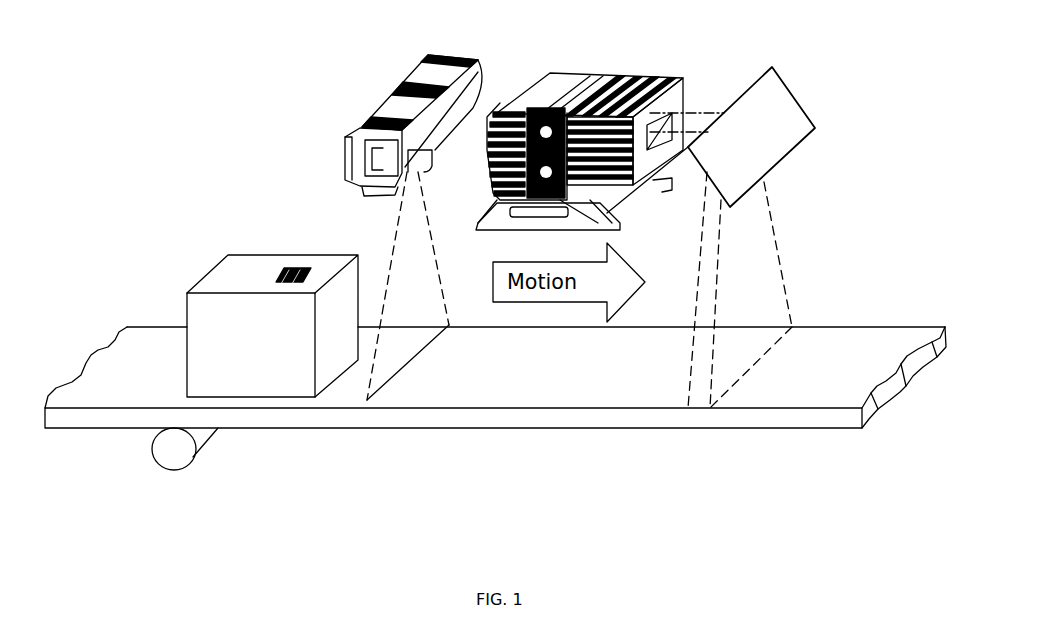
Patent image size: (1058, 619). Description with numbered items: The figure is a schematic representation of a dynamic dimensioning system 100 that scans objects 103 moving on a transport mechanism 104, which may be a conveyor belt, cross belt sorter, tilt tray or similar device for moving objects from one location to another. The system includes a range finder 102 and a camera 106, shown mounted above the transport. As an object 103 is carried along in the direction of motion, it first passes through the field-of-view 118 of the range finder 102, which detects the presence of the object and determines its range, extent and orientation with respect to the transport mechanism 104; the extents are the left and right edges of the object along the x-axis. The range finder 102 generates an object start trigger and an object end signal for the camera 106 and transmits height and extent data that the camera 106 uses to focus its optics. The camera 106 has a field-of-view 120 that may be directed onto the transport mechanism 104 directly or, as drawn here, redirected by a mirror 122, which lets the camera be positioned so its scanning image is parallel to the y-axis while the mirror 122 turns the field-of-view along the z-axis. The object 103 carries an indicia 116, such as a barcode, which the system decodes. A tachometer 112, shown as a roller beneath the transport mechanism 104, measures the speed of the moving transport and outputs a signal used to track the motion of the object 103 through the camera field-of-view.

The dynamic dimensioning system 100 is at (305, 118).
The range finder 102 is at (474, 62).
The object 103 is at (236, 268).
The transport mechanism 104 is at (925, 330).
The camera 106 is at (656, 75).
The tachometer 112 is at (172, 455).
The indicia 116 is at (294, 267).
The field-of-view of range finder 118 is at (432, 248).
The field-of-view of camera 120 is at (770, 305).
The mirror 122 is at (806, 130).